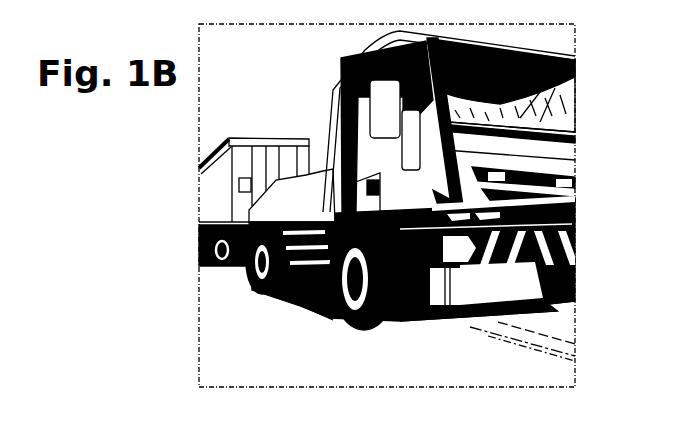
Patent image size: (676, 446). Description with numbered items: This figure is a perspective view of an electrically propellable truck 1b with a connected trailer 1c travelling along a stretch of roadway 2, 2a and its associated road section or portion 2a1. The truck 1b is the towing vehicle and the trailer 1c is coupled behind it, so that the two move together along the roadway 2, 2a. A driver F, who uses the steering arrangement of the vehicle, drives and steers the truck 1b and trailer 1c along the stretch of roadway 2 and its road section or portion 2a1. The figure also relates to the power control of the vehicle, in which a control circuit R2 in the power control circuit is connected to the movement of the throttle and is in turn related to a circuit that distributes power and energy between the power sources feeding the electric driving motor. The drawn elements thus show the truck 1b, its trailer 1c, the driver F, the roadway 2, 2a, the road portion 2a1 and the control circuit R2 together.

The electrically propellable truck 1b is at (368, 53).
The trailer 1c is at (265, 137).
The driver F is at (547, 104).
The stretch of roadway 2 is at (273, 333).
The control circuit R2 is at (322, 318).
The stretch of roadway 2a is at (569, 327).
The road section or portion 2a1 is at (520, 346).